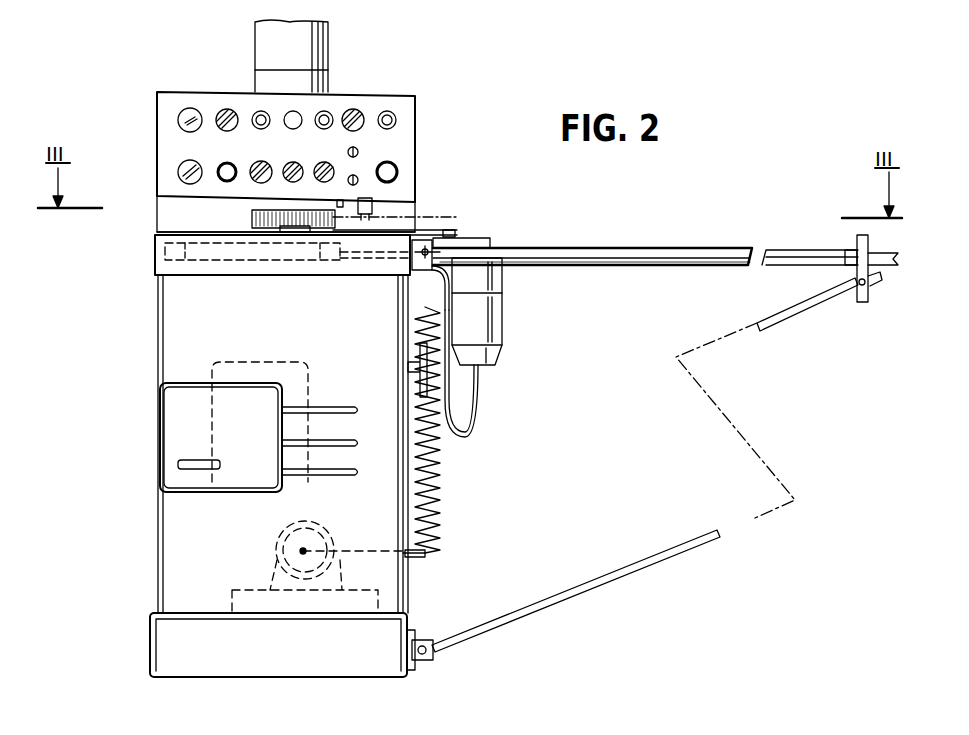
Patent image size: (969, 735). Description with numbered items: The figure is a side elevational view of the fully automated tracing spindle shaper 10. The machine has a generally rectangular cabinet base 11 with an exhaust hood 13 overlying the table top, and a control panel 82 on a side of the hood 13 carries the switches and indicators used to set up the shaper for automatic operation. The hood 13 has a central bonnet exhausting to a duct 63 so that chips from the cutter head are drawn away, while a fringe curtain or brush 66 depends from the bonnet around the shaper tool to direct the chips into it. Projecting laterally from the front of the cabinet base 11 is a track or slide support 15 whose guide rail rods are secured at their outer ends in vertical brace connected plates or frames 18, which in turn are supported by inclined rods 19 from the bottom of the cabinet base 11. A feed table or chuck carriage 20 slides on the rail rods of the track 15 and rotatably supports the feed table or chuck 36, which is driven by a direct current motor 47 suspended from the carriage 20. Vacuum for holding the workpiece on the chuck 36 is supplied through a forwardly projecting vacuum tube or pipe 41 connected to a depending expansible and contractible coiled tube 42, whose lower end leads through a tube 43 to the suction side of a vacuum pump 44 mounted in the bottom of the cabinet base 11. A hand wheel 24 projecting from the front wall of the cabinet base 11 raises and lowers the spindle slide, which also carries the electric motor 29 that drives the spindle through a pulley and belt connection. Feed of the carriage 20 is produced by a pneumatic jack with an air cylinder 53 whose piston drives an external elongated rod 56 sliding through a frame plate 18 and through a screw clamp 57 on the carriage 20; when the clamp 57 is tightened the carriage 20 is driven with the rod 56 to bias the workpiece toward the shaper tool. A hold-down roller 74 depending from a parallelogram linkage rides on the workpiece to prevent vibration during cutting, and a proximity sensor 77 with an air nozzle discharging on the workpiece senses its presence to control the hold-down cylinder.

The fully automated tracing spindle shaper 10 is at (118, 396).
The cabinet base 11 is at (165, 530).
The exhaust hood 13 is at (420, 94).
The track or slide support 15 is at (610, 246).
The vertical brace connected plates or frames 18 is at (860, 304).
The inclined rods 19 is at (790, 322).
The feed table or chuck carriage 20 is at (485, 234).
The hand wheel 24 is at (277, 435).
The electric motor 29 is at (212, 372).
The feed table or chuck 36 is at (428, 246).
The vacuum tube or pipe 41 is at (423, 272).
The expansible and contractible coiled tube 42 is at (438, 462).
The tube 43 is at (375, 557).
The vacuum pump 44 is at (277, 553).
The motor 47 is at (503, 321).
The air cylinder 53 is at (213, 258).
The elongated rod 56 is at (646, 265).
The screw clamp 57 is at (415, 256).
The duct 63 is at (328, 54).
The fringe curtain or brush 66 is at (252, 218).
The roller 74 is at (374, 208).
The proximity sensor 77 is at (340, 199).
The control panel 82 is at (180, 98).